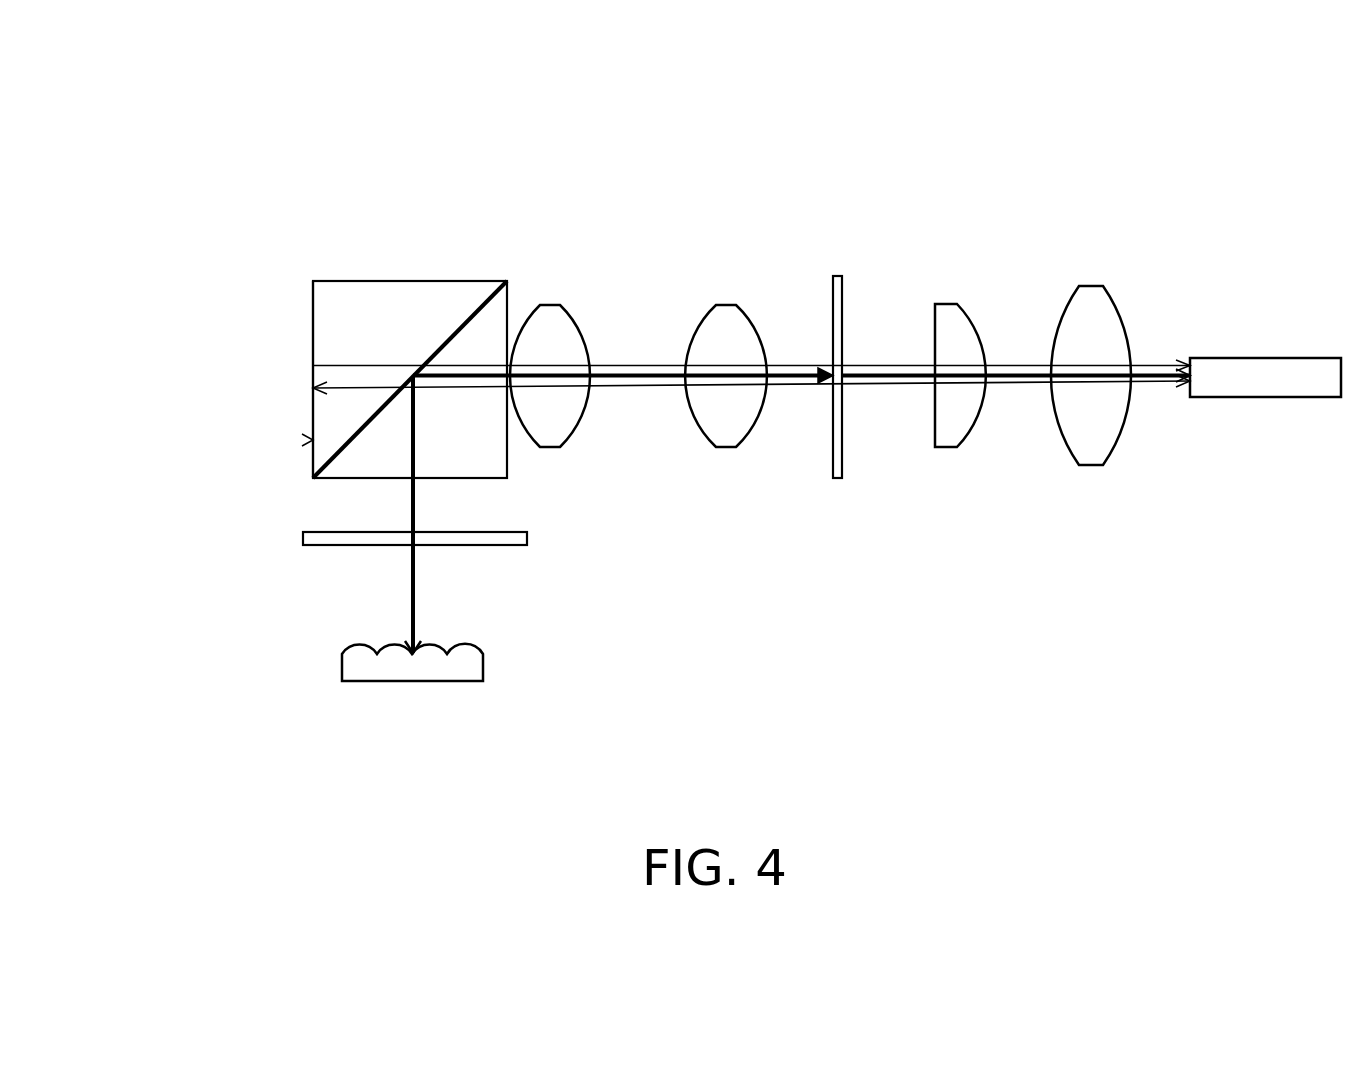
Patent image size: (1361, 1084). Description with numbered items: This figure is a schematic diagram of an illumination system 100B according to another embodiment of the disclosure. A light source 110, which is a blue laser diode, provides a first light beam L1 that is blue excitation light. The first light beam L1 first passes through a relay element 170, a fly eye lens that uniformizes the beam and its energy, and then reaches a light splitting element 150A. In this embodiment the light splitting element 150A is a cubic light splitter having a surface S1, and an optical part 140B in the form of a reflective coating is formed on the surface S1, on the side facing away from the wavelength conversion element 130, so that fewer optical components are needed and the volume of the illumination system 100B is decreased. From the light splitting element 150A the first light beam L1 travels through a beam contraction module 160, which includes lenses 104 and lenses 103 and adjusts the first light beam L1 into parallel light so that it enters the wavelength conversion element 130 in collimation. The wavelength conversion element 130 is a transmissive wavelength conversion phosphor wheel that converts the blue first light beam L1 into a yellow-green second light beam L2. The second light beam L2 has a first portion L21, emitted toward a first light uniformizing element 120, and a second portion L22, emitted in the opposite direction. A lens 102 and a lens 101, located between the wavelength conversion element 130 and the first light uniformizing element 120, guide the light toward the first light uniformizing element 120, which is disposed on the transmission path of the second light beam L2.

The illumination system 100B is at (1287, 776).
The light source 110 is at (484, 667).
The relay element 170 is at (527, 538).
The light splitting element 150A is at (412, 285).
The optical part 140B is at (313, 293).
The surface S1 is at (313, 440).
The beam contraction module 160 is at (697, 213).
The lenses 104 is at (553, 303).
The lenses 103 is at (727, 303).
The wavelength conversion element 130 is at (840, 275).
The lens 102 is at (948, 303).
The lens 101 is at (1092, 285).
The first light uniformizing element 120 is at (1268, 357).
The first light beam L1 is at (645, 380).
The second light beam L2 is at (113, 113).
The first portion L21 is at (1011, 383).
The second portion L22 is at (792, 363).